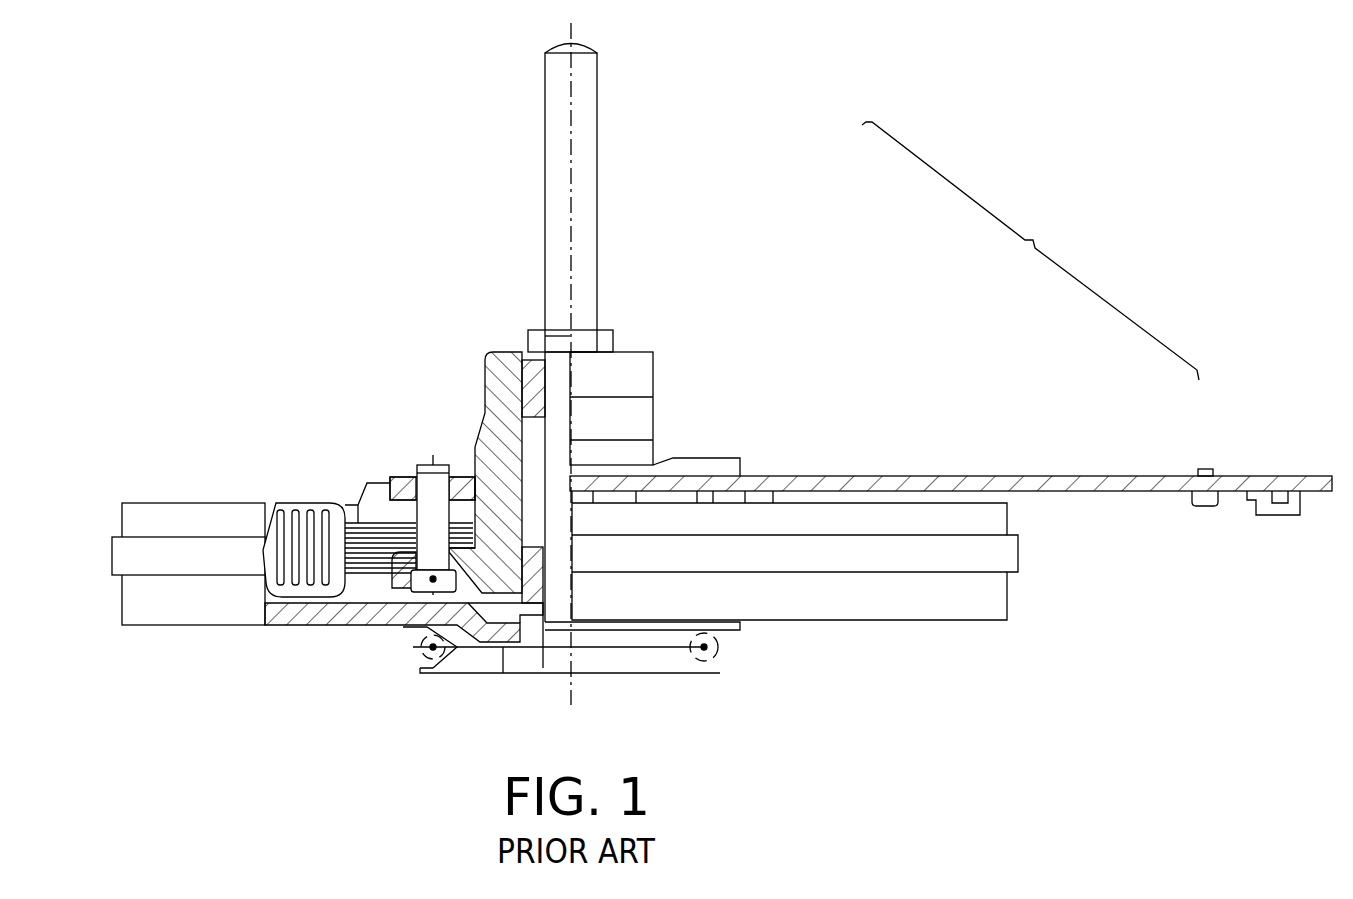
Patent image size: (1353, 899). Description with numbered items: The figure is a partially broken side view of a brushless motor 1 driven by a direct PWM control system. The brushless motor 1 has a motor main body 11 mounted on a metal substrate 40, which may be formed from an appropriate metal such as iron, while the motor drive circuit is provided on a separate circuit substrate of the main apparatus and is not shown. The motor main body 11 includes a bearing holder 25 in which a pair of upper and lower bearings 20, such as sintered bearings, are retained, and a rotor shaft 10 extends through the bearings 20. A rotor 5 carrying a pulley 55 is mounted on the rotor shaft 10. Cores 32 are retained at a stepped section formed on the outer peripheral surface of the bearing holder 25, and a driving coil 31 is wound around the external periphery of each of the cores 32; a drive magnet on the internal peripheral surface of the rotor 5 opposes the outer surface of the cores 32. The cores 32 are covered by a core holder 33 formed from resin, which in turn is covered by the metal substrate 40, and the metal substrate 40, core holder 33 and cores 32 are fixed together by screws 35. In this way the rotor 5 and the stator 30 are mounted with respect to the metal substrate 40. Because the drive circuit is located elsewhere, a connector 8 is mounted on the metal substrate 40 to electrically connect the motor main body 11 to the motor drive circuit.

The brushless motor 1 is at (1158, 246).
The rotor 5 is at (953, 605).
The connector 8 is at (1288, 515).
The rotor shaft 10 is at (556, 360).
The motor main body 11 is at (1030, 251).
The bearings 20 is at (530, 407).
The bearing holder 25 is at (655, 352).
The stator 30 is at (327, 510).
The driving coil 31 is at (292, 503).
The cores 32 is at (360, 503).
The core holder 33 is at (373, 493).
The screws 35 is at (419, 465).
The metal substrate 40 is at (864, 477).
The pulley 55 is at (467, 673).